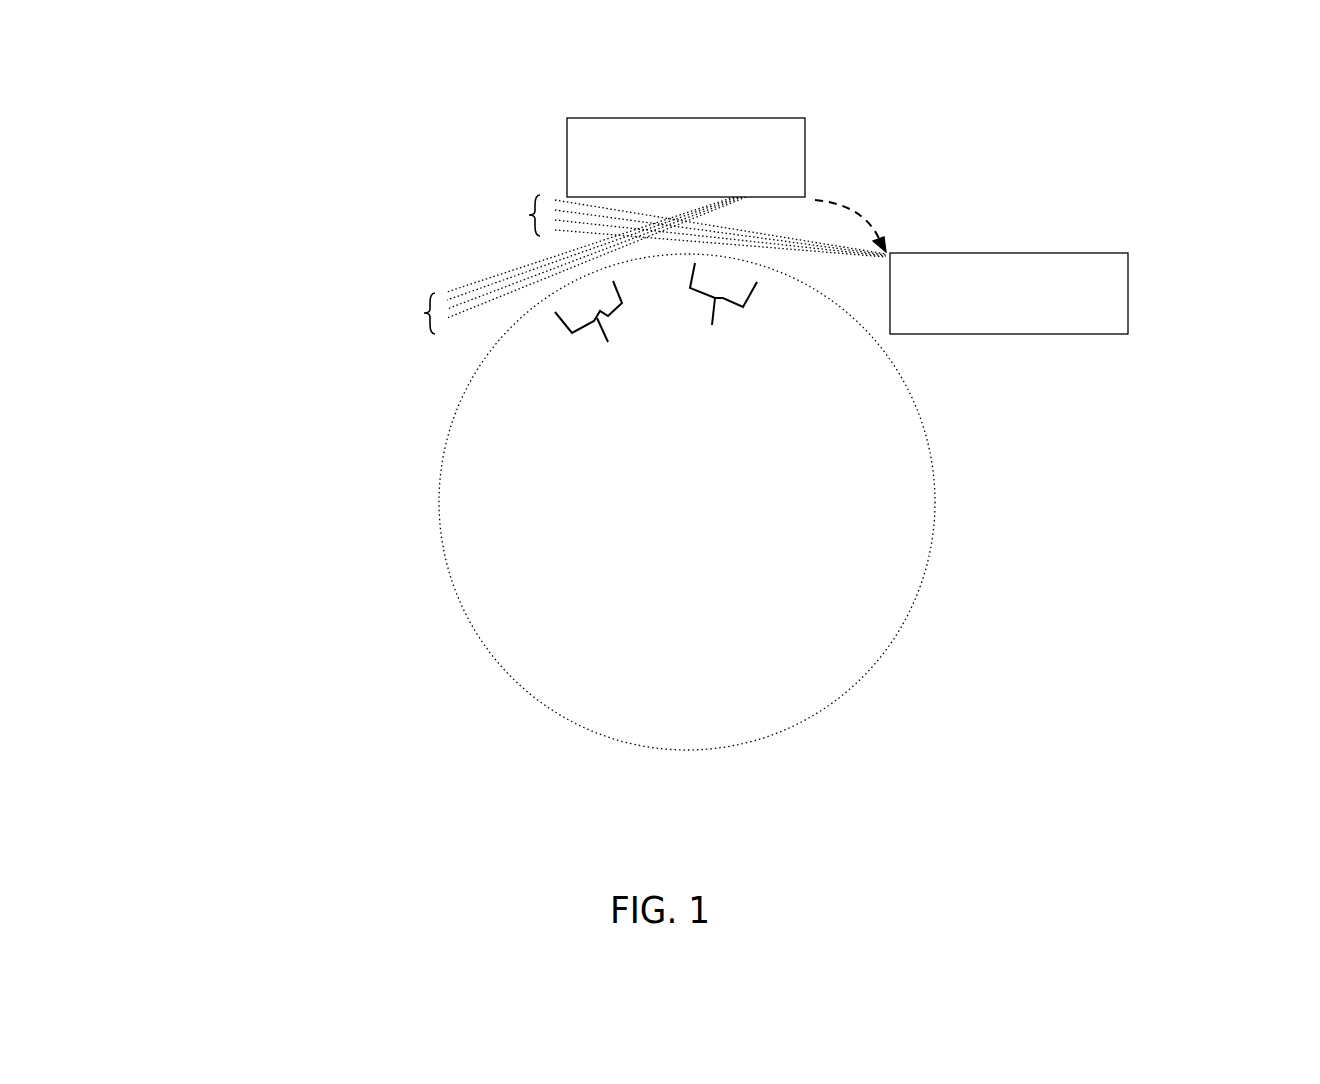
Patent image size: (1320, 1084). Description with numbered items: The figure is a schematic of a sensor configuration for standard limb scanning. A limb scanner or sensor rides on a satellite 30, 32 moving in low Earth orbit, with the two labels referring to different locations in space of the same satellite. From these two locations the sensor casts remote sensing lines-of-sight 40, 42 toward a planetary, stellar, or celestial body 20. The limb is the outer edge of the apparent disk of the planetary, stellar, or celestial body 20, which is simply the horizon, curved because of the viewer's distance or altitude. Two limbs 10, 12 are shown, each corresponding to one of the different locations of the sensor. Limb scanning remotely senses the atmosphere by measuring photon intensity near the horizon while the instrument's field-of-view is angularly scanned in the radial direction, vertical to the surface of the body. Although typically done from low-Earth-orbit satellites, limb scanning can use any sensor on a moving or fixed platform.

The limb 10 is at (608, 346).
The limb 12 is at (716, 331).
The planetary, stellar, or celestial body 20 is at (897, 635).
The satellite 30 is at (805, 172).
The satellite 32 is at (922, 253).
The remote sensing line-of-sight 40 is at (412, 306).
The remote sensing line-of-sight 42 is at (517, 213).